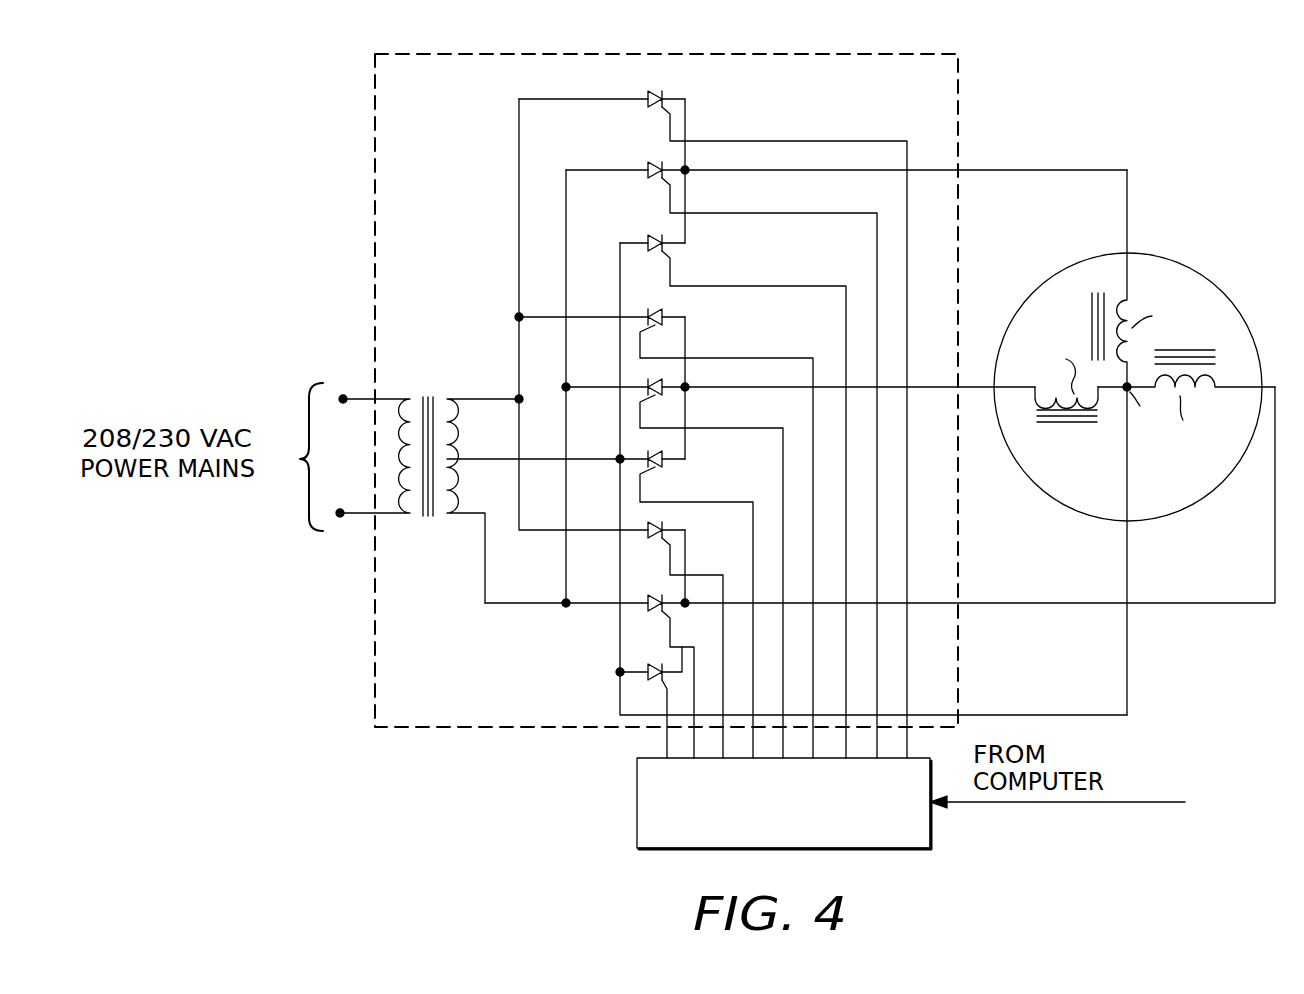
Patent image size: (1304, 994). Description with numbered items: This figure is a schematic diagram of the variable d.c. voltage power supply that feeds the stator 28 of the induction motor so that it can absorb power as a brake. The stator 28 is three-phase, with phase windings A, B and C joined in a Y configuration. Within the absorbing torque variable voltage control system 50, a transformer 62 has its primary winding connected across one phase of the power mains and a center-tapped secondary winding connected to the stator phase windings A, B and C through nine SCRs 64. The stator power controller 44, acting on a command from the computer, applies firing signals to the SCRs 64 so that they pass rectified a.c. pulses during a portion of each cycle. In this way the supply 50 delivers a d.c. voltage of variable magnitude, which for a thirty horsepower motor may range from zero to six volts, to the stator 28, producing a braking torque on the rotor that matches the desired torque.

The stator 28 is at (1228, 296).
The stator power controller 44 is at (637, 791).
The variable voltage d.c. supply 50 is at (959, 141).
The transformer 62 is at (433, 396).
The SCRs 64 is at (650, 108).